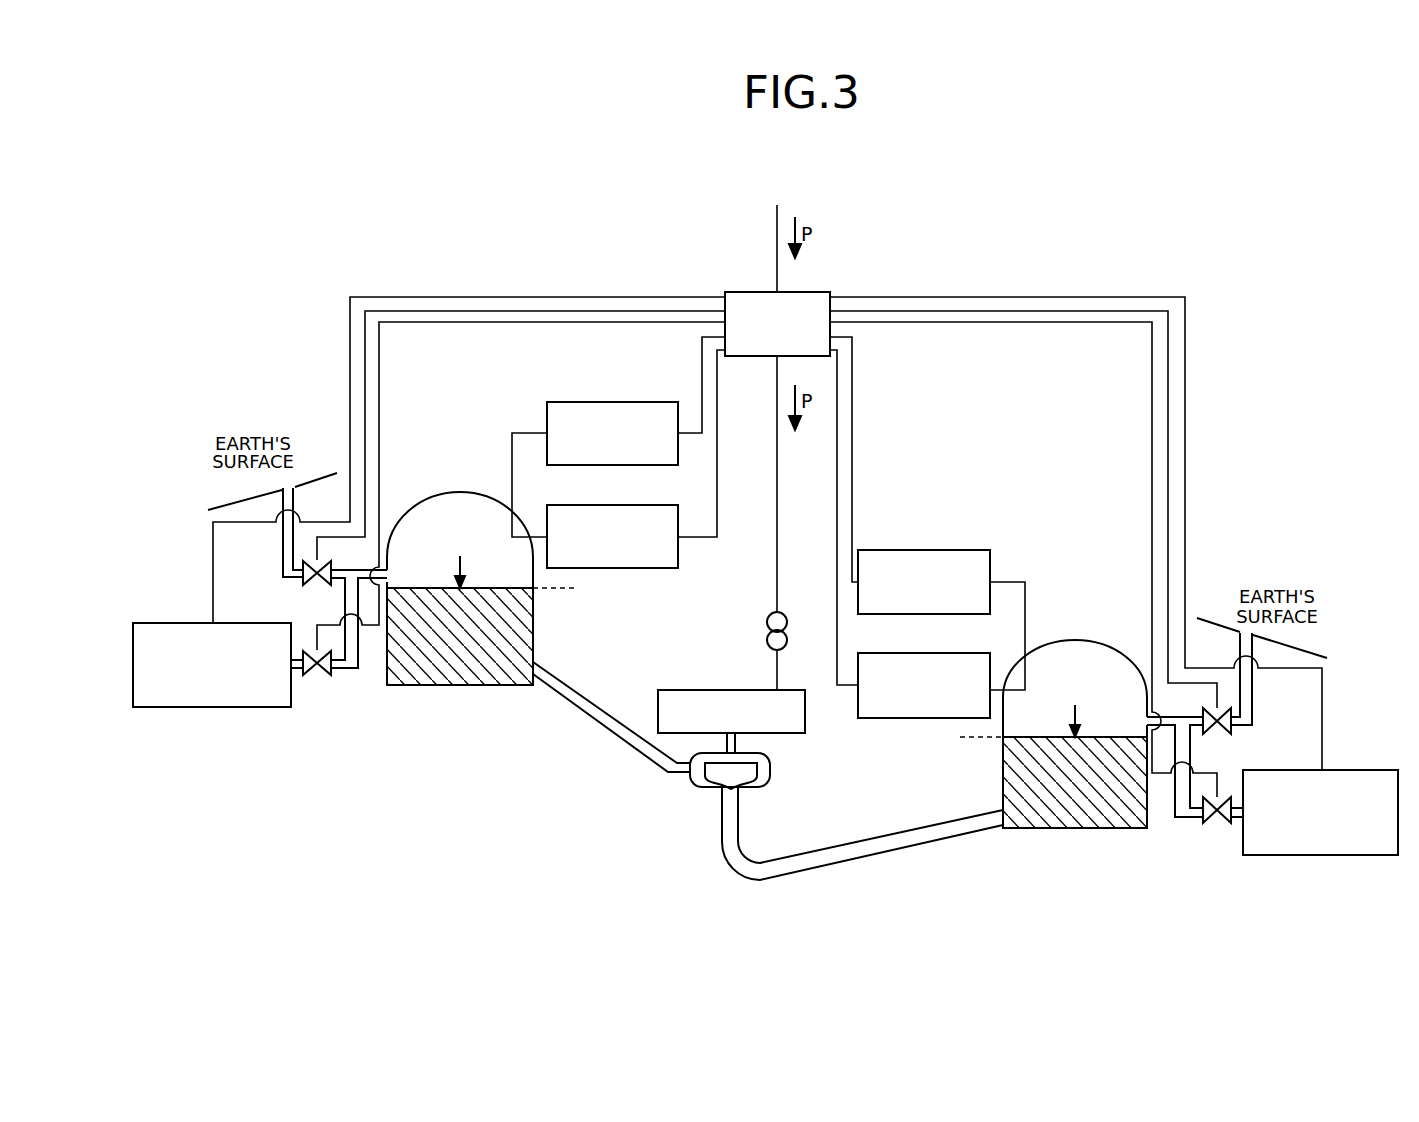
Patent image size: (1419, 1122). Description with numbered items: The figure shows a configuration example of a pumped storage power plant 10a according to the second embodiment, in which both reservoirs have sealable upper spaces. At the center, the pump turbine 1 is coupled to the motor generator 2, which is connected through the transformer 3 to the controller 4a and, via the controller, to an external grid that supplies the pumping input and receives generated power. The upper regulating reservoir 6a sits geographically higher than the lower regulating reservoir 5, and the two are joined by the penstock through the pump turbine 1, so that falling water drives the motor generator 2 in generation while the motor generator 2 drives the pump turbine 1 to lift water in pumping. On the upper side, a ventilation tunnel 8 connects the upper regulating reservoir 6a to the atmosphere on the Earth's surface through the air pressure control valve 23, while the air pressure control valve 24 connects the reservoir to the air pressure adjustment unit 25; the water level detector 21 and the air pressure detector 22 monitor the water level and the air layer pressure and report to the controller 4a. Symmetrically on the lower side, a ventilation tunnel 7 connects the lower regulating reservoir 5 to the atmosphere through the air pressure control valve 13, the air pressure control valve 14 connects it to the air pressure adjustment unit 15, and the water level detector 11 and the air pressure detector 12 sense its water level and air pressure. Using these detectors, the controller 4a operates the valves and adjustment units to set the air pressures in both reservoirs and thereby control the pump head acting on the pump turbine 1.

The pumped storage power plant 10a is at (1130, 171).
The controller 4a is at (817, 293).
The air pressure detector 22 is at (642, 402).
The water level detector 21 is at (642, 506).
The air pressure detector 12 is at (957, 550).
The water level detector 11 is at (957, 653).
The air pressure adjustment unit 25 is at (180, 622).
The air pressure adjustment unit 15 is at (1355, 770).
The upper regulating reservoir 6a is at (458, 490).
The lower regulating reservoir 5 is at (1082, 640).
The ventilation tunnel 8 is at (300, 492).
The ventilation tunnel 7 is at (1240, 640).
The air pressure control valve 23 is at (302, 584).
The air pressure control valve 24 is at (322, 678).
The air pressure control valve 13 is at (1231, 733).
The air pressure control valve 14 is at (1222, 828).
The motor generator 2 is at (684, 690).
The transformer 3 is at (767, 623).
The pump turbine 1 is at (711, 790).